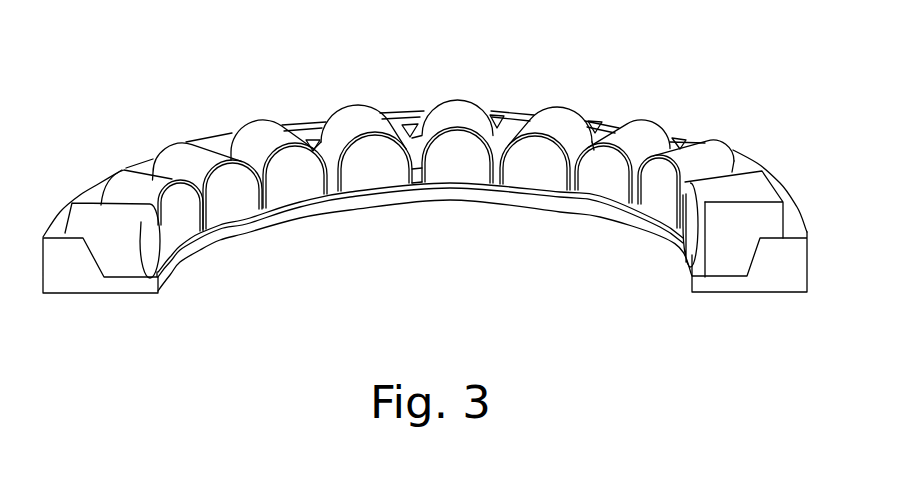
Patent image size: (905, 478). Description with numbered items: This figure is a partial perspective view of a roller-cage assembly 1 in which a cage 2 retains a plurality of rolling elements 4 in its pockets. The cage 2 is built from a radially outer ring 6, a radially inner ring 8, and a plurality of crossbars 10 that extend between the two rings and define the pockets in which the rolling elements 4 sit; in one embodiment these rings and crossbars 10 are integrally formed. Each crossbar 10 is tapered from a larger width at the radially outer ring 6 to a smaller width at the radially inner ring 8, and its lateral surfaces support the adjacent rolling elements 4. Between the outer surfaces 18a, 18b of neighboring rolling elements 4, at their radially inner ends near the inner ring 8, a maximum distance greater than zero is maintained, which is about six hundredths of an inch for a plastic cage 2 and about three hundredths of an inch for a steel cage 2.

The roller-cage assembly 1 is at (243, 106).
The cage 2 is at (313, 130).
The rolling elements 4 is at (547, 130).
The radially outer ring 6 is at (775, 192).
The radially inner ring 8 is at (243, 227).
The crossbars 10 is at (410, 128).
The outer surface 18a is at (413, 170).
The outer surface 18b is at (409, 132).